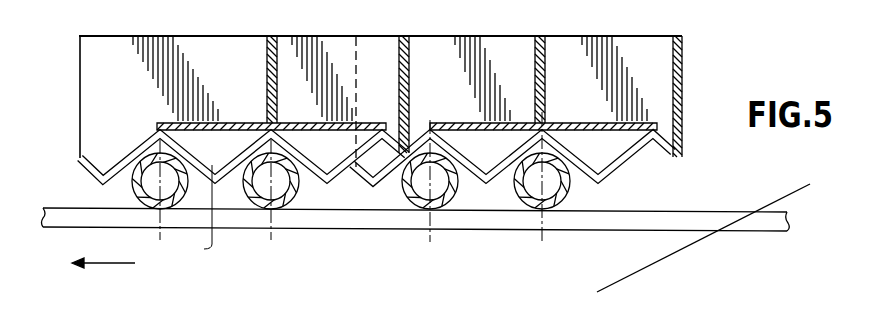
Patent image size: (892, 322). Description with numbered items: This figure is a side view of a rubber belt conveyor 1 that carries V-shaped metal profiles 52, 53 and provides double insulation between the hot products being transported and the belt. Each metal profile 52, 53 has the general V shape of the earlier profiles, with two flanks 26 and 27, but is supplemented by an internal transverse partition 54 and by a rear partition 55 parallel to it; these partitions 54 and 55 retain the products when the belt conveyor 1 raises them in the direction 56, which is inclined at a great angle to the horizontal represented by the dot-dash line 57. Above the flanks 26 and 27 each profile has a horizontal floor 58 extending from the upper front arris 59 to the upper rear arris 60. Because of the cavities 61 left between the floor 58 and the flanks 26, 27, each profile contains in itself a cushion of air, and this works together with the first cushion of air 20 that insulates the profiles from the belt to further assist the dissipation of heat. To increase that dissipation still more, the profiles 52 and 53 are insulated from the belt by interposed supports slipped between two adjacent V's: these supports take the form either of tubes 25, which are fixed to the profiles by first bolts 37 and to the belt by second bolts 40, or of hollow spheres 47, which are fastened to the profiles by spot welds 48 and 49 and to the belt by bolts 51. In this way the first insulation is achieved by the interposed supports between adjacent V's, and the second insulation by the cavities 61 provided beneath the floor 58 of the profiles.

The belt conveyor 1 is at (80, 208).
The first cushion of air 20 is at (628, 205).
The tubes 25 is at (143, 185).
The flank 26 is at (136, 143).
The flank 27 is at (194, 215).
The first bolts 37 is at (430, 104).
The second bolts 40 is at (436, 238).
The hollow spheres 47 is at (257, 193).
The spot weld 48 is at (250, 148).
The spot weld 49 is at (602, 135).
The bolts 51 is at (290, 242).
The metal profile 52 is at (207, 34).
The metal profile 53 is at (600, 46).
The internal transverse partition 54 is at (278, 82).
The rear partition 55 is at (410, 88).
The direction 56 is at (115, 263).
The dot-dash line 57 is at (680, 250).
The horizontal floor 58 is at (238, 121).
The upper front arris 59 is at (157, 124).
The upper rear arris 60 is at (658, 130).
The cavities 61 is at (488, 158).